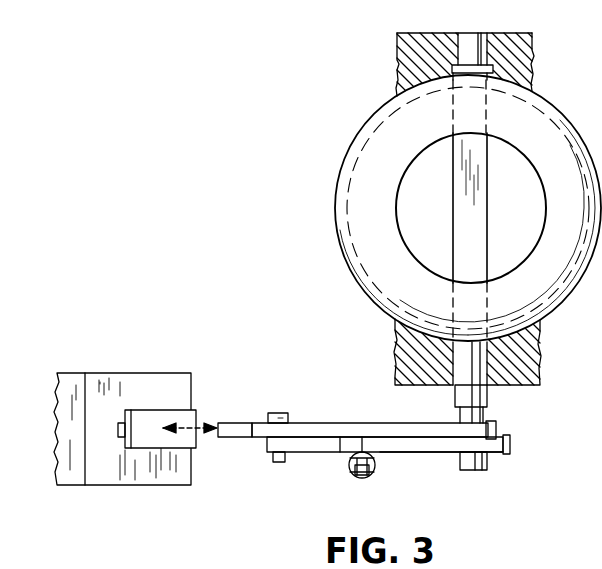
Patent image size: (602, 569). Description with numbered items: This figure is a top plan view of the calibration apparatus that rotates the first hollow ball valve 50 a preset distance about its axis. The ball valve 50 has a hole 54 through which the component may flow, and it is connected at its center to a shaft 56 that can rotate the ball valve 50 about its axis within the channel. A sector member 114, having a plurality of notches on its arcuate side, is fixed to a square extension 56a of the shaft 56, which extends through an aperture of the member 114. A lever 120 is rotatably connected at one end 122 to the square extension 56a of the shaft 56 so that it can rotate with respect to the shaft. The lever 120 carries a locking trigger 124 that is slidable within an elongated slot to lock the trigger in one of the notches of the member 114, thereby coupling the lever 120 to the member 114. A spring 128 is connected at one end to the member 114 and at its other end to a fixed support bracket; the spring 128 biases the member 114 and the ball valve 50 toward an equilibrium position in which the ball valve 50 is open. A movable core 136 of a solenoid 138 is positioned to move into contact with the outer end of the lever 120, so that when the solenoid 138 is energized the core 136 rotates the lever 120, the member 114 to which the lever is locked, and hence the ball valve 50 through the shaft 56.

The first hollow ball valve 50 is at (346, 261).
The hole 54 is at (427, 203).
The shaft 56 is at (463, 233).
The square extension of shaft 56a is at (470, 473).
The sector member 114 is at (422, 455).
The lever 120 is at (340, 421).
The end of lever 122 is at (497, 427).
The locking trigger 124 is at (310, 445).
The spring 128 is at (360, 478).
The movable core 136 is at (189, 419).
The solenoid 138 is at (92, 388).